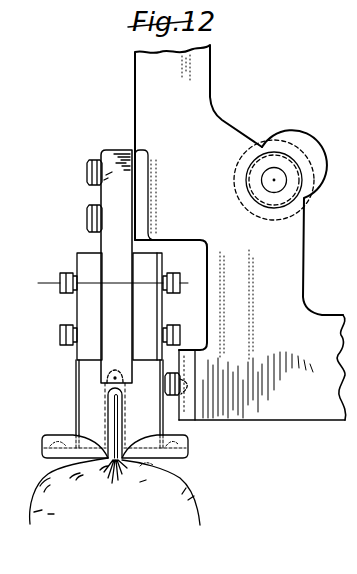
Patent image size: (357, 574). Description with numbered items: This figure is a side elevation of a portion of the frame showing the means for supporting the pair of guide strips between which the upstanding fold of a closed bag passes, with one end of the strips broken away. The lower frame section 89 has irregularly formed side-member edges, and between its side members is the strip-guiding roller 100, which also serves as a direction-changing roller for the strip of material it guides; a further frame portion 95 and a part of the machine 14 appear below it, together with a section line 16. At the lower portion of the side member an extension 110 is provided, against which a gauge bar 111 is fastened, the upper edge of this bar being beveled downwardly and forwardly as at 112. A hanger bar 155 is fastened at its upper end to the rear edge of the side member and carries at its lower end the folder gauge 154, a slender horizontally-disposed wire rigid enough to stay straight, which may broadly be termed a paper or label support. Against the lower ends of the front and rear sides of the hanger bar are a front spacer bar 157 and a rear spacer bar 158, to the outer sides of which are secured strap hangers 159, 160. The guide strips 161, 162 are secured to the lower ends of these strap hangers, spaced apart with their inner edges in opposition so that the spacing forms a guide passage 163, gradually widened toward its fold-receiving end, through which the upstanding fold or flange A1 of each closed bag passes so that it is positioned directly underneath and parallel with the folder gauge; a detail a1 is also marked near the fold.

The machine bed 14 is at (352, 442).
The section line 16 is at (38, 283).
The lower frame section 89 is at (282, 258).
The frame lower portion 95 is at (290, 405).
The strip-guiding roller 100 is at (307, 172).
The extension 110 is at (200, 403).
The gauge bar 111 is at (185, 372).
The beveled upper edge 112 is at (179, 391).
The folder gauge 154 is at (102, 374).
The hanger bar 155 is at (118, 341).
The front spacer bar 157 is at (145, 313).
The rear spacer bar 158 is at (86, 311).
The strap hanger 159 is at (146, 385).
The strap hanger 160 is at (75, 422).
The guide strip 161 is at (186, 468).
The guide strip 162 is at (58, 458).
The guide passage 163 is at (100, 474).
The upstanding fold or flange A1 is at (107, 409).
The thread a1 is at (142, 472).